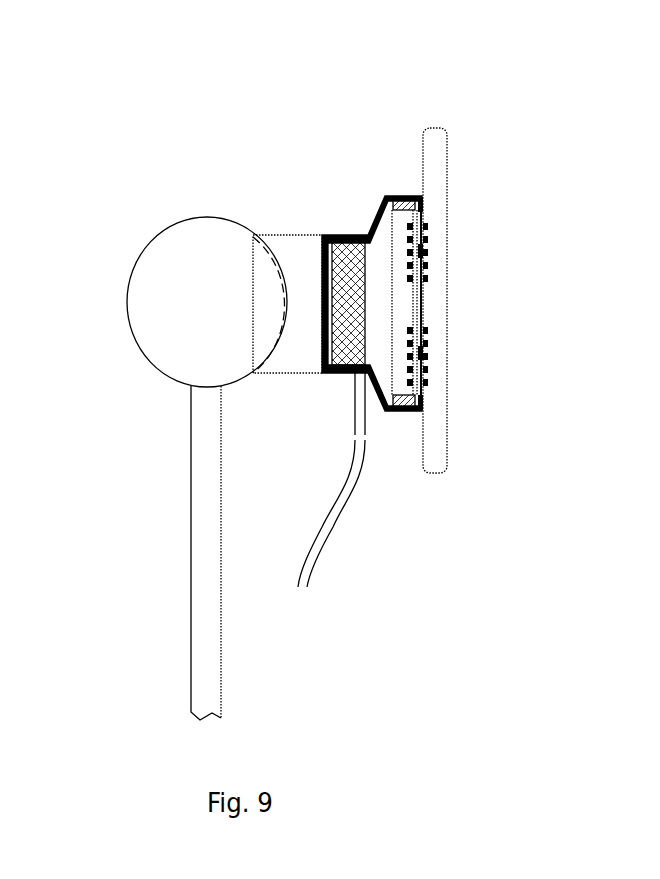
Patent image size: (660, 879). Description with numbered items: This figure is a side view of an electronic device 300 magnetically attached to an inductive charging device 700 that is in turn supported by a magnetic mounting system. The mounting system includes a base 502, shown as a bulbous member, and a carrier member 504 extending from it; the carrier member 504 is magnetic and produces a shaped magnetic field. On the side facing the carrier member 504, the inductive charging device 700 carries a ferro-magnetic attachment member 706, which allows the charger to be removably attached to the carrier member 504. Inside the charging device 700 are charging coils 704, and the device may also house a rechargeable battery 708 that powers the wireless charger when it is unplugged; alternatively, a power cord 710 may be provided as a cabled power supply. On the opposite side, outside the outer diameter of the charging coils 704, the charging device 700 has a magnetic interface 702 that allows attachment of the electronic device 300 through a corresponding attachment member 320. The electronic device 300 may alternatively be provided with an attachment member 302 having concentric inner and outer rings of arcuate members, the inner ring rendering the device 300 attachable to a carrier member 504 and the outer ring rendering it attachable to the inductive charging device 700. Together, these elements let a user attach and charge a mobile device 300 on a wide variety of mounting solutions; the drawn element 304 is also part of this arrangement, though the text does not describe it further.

The electronic device 300 is at (440, 213).
The attachment member 302 is at (428, 357).
The electrode 304 is at (428, 263).
The attachment member 320 is at (424, 200).
The base 502 is at (155, 270).
The carrier member 504 is at (290, 338).
The inductive charging device 700 is at (390, 193).
The magnetic interface 702 is at (418, 460).
The charging coils 704 is at (337, 233).
The ferro-magnetic attachment member 706 is at (285, 235).
The rechargeable battery 708 is at (320, 235).
The power cord 710 is at (335, 518).